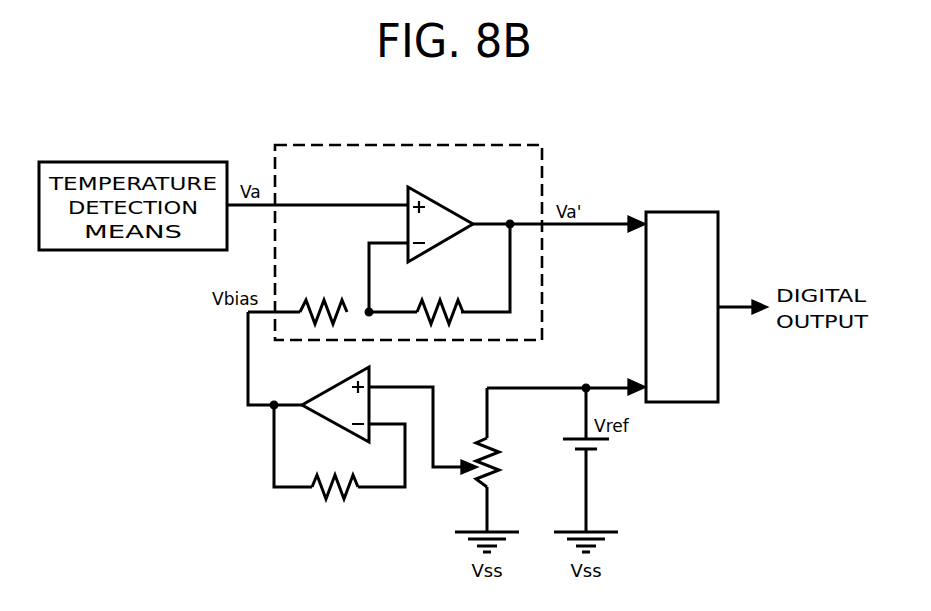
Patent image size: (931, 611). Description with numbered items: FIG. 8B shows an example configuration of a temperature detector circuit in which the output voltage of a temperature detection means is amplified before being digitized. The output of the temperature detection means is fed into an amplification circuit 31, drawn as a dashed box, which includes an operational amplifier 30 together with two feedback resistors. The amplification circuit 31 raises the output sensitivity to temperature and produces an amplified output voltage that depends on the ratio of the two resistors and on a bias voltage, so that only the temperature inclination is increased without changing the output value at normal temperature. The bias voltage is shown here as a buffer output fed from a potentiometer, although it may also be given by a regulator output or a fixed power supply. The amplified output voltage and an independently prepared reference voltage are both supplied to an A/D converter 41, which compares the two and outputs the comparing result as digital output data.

The operational amplifier 30 is at (441, 197).
The amplification circuit 31 is at (505, 146).
The A/D converter 41 is at (690, 212).